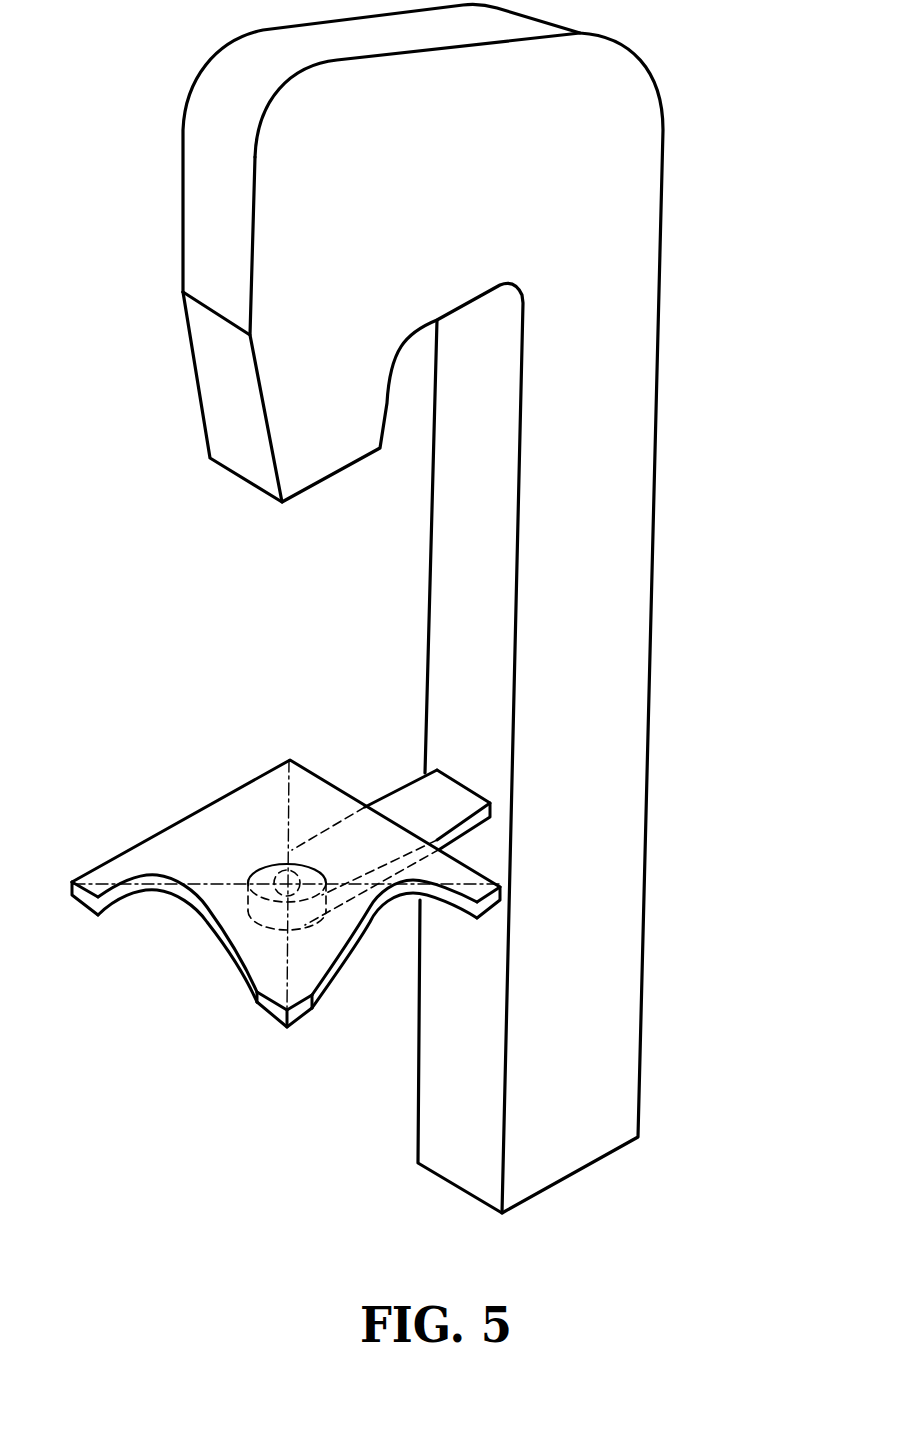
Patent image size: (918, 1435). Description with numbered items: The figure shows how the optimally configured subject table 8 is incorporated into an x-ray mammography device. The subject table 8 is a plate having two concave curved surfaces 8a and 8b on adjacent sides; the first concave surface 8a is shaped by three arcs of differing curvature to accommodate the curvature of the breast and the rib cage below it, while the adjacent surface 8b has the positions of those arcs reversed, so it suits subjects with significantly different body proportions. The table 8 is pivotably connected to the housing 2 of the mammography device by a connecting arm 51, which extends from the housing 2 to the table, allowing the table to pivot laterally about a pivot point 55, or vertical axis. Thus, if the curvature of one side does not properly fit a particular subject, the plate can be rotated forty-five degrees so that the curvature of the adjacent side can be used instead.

The housing 2 is at (558, 733).
The subject table 8 is at (286, 845).
The concave curved surface 8a is at (203, 913).
The adjacent concave curved surface 8b is at (372, 913).
The connecting arm 51 is at (430, 817).
The pivot point 55 is at (283, 882).